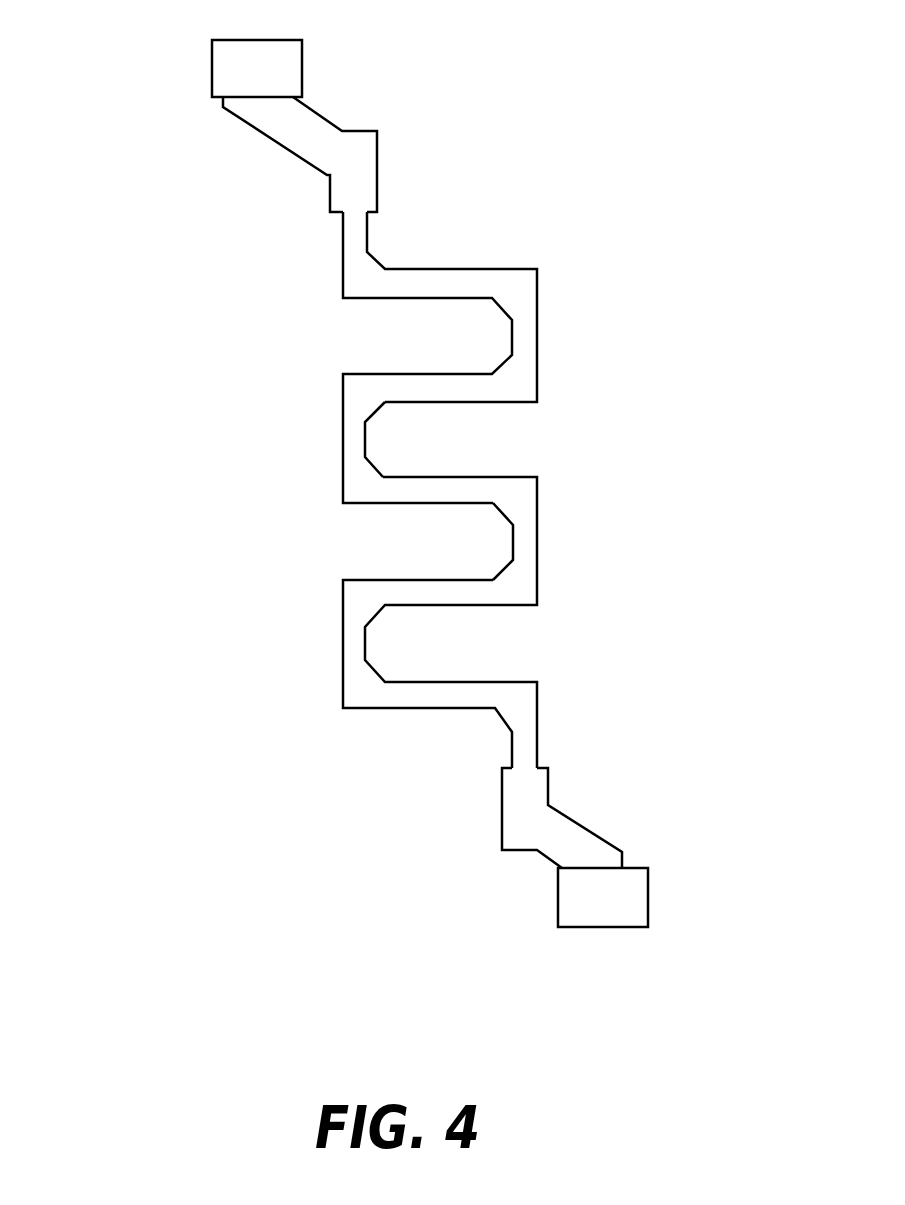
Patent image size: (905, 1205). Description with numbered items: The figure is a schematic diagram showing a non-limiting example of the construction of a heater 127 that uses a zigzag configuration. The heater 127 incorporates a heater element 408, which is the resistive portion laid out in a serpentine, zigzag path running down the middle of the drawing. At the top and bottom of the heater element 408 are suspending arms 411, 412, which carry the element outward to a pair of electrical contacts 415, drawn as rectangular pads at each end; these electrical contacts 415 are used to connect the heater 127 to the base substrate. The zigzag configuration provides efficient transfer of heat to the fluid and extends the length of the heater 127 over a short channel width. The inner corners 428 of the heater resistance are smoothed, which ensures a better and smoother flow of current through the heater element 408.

The heater 127 is at (550, 153).
The heater element 408 is at (505, 269).
The suspending arm 411 is at (282, 148).
The suspending arm 412 is at (585, 822).
The electrical contacts 415 is at (212, 67).
The inner corners 428 is at (375, 465).